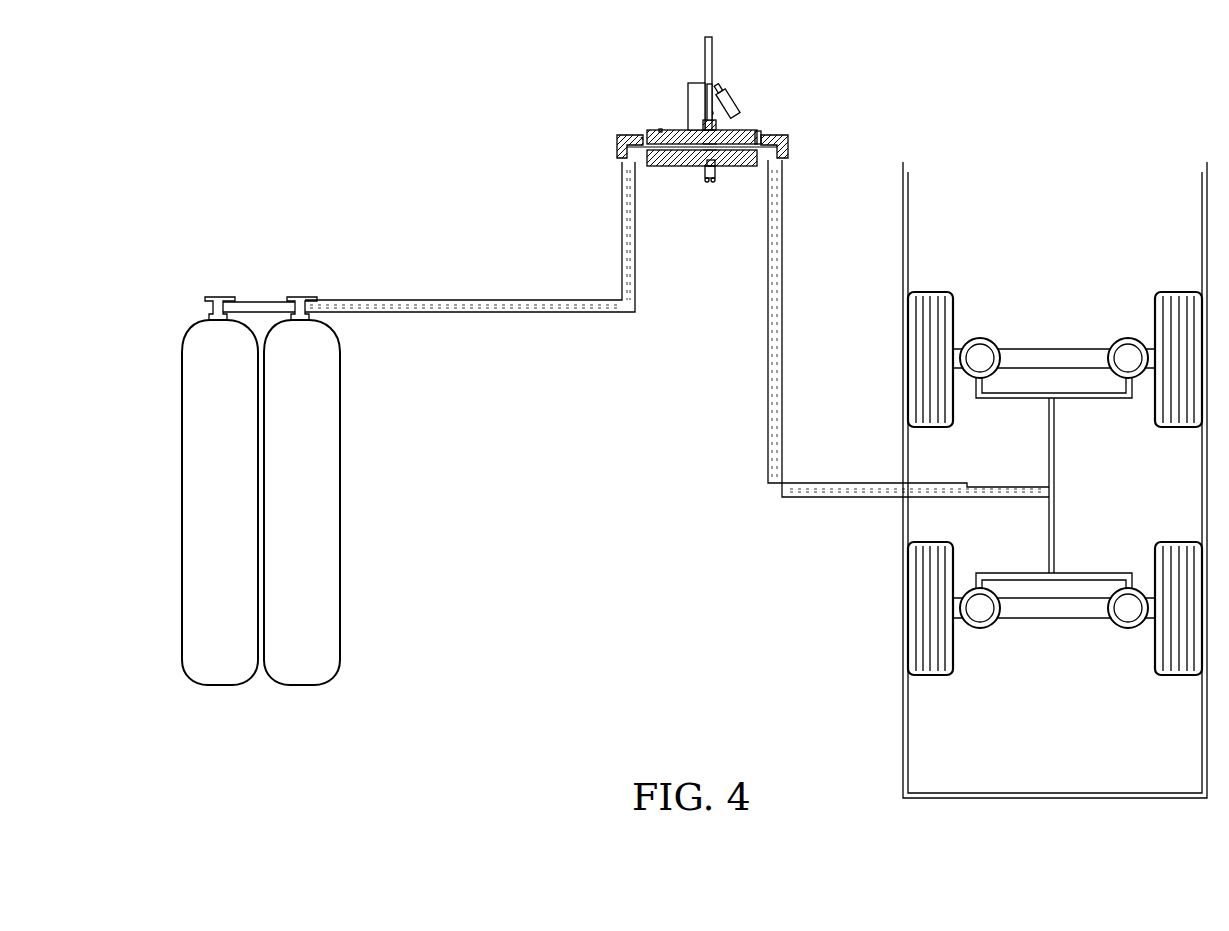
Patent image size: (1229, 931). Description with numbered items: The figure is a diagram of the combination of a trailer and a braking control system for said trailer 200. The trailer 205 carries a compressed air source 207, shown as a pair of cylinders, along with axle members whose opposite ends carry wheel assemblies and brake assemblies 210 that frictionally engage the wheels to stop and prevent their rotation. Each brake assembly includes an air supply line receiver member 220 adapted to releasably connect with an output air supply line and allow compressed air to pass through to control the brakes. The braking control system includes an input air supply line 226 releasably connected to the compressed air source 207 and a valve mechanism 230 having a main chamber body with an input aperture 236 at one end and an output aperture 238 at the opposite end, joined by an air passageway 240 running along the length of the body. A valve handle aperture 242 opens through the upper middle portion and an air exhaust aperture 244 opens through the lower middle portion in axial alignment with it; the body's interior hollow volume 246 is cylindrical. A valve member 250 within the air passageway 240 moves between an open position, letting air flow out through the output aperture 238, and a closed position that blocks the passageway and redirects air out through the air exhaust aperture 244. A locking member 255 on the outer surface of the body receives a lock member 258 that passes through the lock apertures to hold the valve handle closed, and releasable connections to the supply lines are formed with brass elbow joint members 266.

The combination of a trailer and a braking control system 200 is at (942, 76).
The trailer 205 is at (1033, 197).
The compressed air source 207 is at (261, 491).
The brake assembly 210 is at (960, 336).
The air supply line receiver member 220 is at (536, 313).
The input air supply line 226 is at (636, 246).
The valve mechanism 230 is at (690, 136).
The input aperture 236 is at (641, 137).
The output aperture 238 is at (758, 132).
The air passageway 240 is at (680, 166).
The valve handle aperture 242 is at (716, 82).
The air exhaust aperture 244 is at (720, 178).
The interior hollow volume 246 is at (665, 166).
The valve member 250 is at (660, 131).
The locking member 255 is at (692, 83).
The lock member 258 is at (735, 100).
The elbow joint member 266 is at (617, 149).